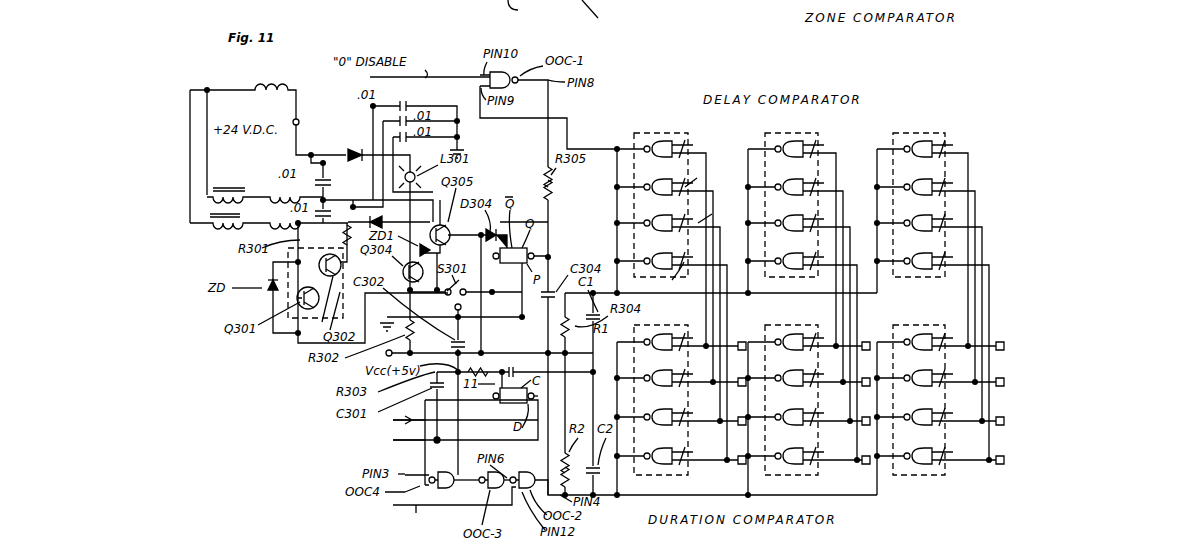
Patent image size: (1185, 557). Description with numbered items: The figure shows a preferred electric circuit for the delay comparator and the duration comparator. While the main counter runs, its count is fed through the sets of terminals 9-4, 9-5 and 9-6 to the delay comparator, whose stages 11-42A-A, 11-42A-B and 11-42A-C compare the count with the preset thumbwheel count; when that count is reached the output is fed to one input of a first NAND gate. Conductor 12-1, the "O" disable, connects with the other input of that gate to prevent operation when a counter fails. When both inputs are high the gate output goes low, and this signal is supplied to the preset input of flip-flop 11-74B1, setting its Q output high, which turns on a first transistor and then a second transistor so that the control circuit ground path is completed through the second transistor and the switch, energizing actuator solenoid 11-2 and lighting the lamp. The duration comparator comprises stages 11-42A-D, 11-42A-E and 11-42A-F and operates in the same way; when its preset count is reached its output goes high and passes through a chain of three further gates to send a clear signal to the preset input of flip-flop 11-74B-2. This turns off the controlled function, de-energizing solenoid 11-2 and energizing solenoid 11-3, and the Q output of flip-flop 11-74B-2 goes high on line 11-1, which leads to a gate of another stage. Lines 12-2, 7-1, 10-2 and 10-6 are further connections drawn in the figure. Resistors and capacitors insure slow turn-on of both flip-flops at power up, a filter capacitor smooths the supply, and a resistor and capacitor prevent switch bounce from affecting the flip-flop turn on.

The actuator solenoid 11-2 is at (240, 170).
The actuator solenoid 11-3 is at (218, 228).
The "O" disable conductor 12-1 is at (440, 78).
The input line 12-2 is at (393, 440).
The line 11-1 is at (393, 420).
The input line 7-1 is at (454, 508).
The line 10-2 is at (531, 10).
The line 10-6 is at (605, 14).
The set of terminals 9-4 is at (1003, 320).
The set of terminals 9-5 is at (871, 320).
The set of terminals 9-6 is at (744, 326).
The delay comparator stage 11-42A-A is at (636, 133).
The delay comparator stage 11-42A-B is at (770, 133).
The delay comparator stage 11-42A-C is at (895, 133).
The duration comparator stage 11-42A-D is at (645, 483).
The duration comparator stage 11-42A-E is at (770, 483).
The duration comparator stage 11-42A-F is at (900, 483).
The flip-flop 11-74B1 is at (530, 256).
The flip-flop 11-74B-2 is at (500, 403).